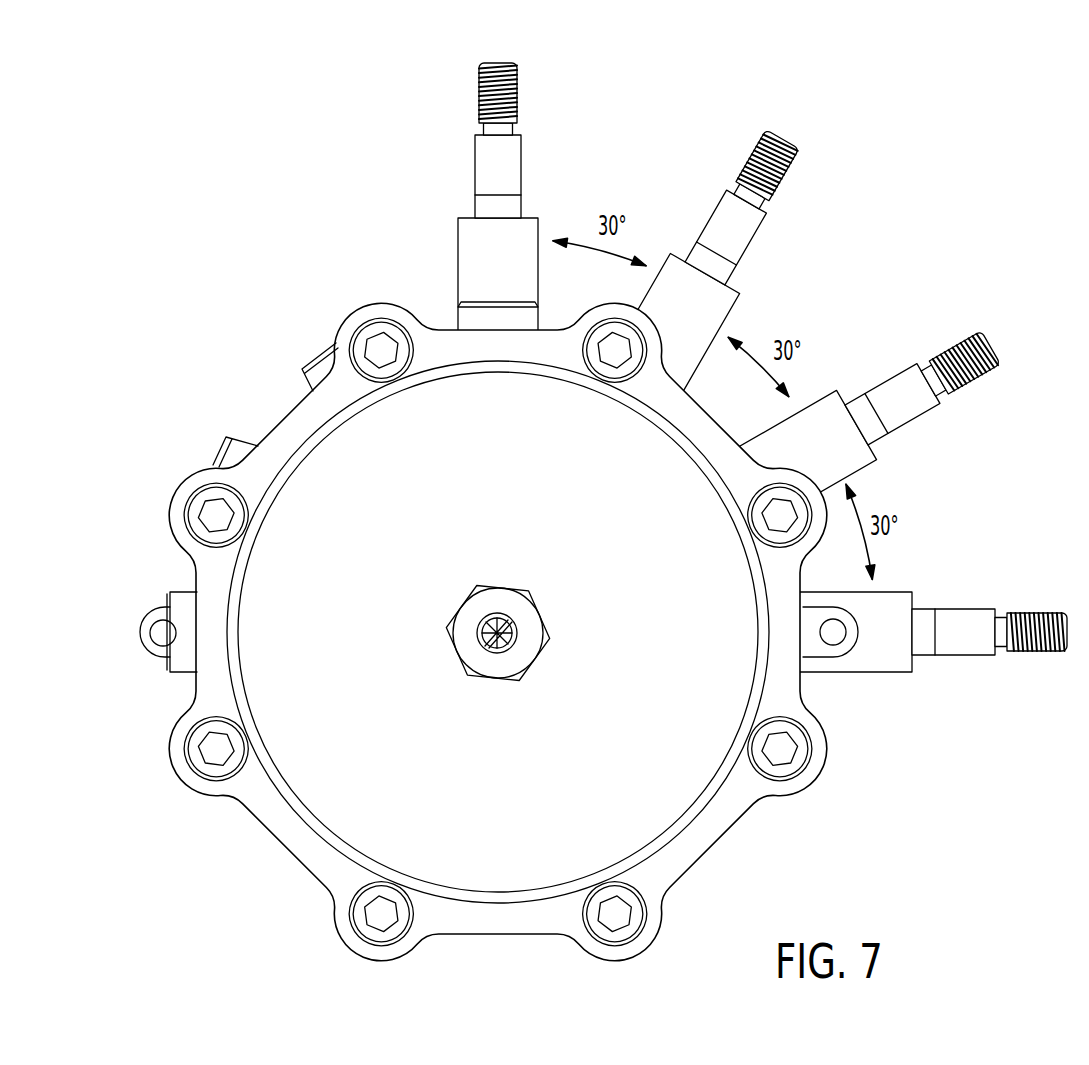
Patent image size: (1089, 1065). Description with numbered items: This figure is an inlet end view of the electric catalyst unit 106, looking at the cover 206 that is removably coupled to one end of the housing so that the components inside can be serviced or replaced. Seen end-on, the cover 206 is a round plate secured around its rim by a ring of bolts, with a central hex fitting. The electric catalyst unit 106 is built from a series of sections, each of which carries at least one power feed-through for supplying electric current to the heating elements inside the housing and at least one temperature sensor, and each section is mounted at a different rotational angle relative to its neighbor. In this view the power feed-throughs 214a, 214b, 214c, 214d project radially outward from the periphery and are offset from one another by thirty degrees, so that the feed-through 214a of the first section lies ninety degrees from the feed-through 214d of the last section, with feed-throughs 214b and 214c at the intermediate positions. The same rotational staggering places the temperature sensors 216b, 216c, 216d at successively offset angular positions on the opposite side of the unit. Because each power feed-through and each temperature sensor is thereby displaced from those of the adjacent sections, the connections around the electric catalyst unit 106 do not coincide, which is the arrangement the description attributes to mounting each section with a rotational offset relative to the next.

The electric catalyst unit 106 is at (176, 211).
The cover 206 is at (720, 820).
The power feed-through 214a is at (958, 642).
The power feed-through 214b is at (908, 412).
The power feed-through 214c is at (740, 242).
The power feed-through 214d is at (514, 166).
The temperature sensor 216b is at (318, 358).
The temperature sensor 216c is at (222, 452).
The temperature sensor 216d is at (170, 604).